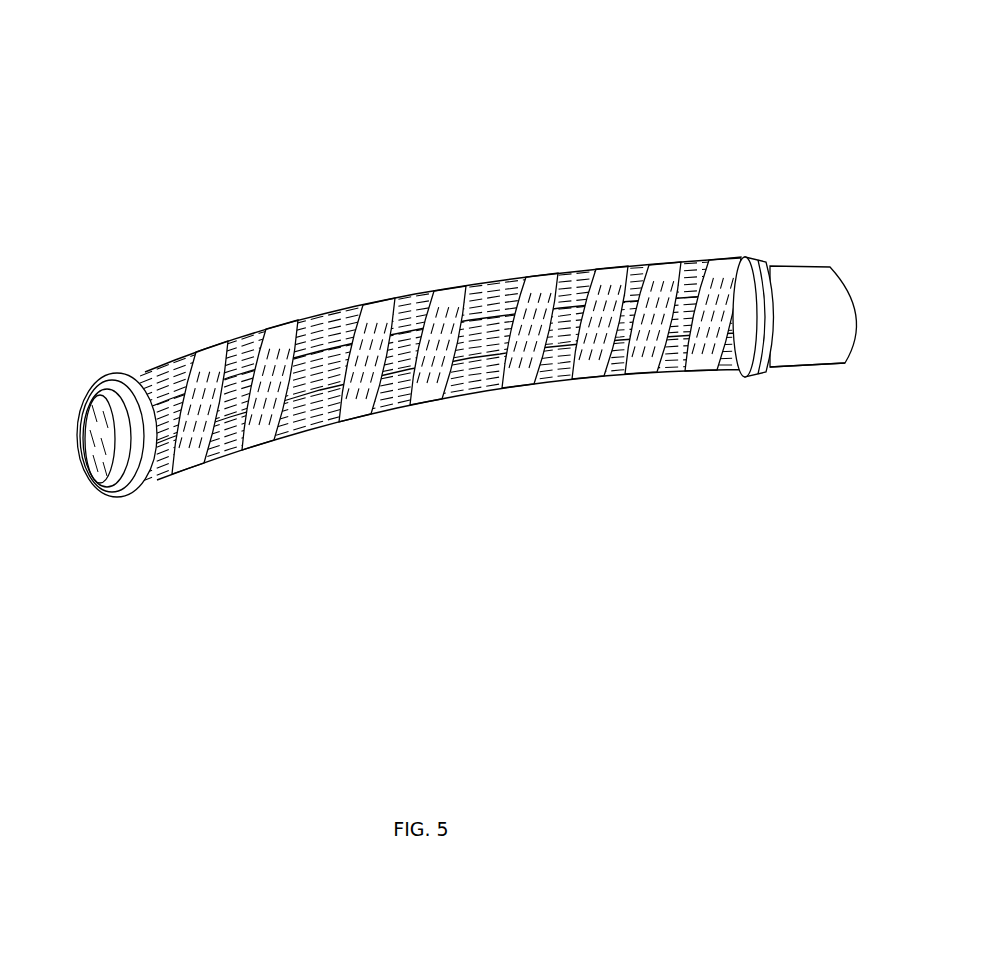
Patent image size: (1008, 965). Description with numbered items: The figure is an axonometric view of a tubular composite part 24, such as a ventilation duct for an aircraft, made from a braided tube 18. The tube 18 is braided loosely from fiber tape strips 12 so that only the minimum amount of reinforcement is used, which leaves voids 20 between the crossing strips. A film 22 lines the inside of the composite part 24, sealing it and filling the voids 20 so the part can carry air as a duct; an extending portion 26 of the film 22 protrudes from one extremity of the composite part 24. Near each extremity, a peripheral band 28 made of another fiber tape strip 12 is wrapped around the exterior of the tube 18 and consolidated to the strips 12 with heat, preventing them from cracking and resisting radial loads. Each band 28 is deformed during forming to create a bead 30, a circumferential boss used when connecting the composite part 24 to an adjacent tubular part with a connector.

The fiber tape strips 12 is at (305, 310).
The tube 18 is at (648, 267).
The voids 20 is at (447, 297).
The film 22 is at (812, 353).
The composite part 24 is at (441, 170).
The extending portion 26 is at (815, 330).
The peripheral bands 28 is at (764, 273).
The beads 30 is at (740, 373).